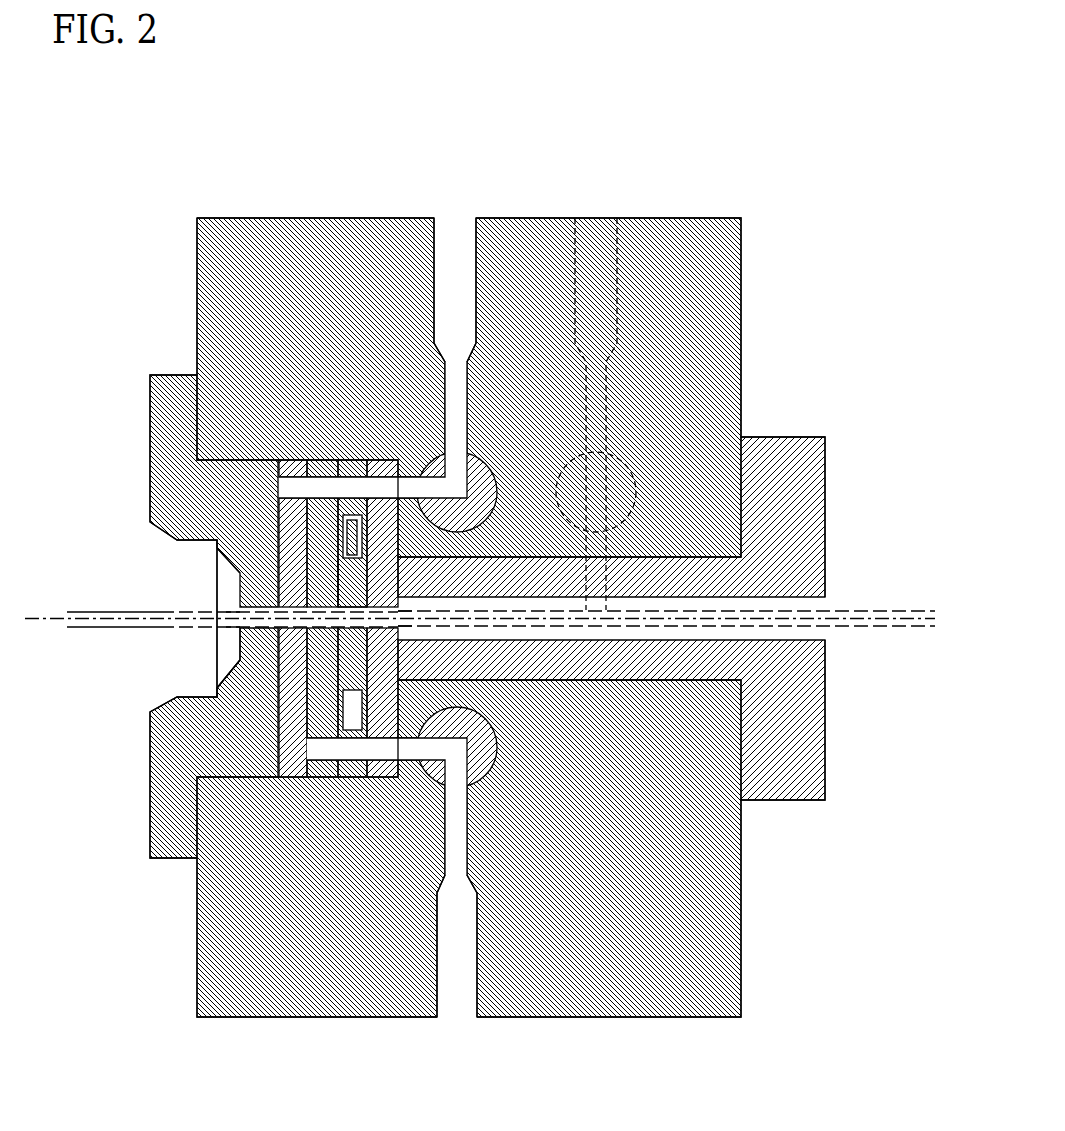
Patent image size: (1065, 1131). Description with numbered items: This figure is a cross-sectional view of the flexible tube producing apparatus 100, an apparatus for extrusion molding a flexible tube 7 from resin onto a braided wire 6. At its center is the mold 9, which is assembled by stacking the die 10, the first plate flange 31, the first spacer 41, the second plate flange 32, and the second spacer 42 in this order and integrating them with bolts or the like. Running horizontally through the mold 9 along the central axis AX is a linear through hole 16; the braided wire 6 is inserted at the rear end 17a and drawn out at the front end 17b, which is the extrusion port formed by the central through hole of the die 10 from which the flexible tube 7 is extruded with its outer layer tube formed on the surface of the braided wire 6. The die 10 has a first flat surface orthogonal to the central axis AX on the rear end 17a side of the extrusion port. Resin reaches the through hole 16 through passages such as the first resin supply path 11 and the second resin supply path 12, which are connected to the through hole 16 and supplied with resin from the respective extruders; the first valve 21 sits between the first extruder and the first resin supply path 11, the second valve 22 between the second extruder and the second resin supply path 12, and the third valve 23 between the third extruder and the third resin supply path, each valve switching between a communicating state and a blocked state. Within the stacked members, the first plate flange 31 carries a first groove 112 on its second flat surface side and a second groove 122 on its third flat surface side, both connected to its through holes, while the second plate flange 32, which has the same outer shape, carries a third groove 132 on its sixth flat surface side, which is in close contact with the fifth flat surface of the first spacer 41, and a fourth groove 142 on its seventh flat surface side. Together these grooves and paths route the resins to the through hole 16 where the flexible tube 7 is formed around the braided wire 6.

The flexible tube producing apparatus 100 is at (192, 172).
The first resin supply path 11 is at (355, 488).
The second resin supply path 12 is at (278, 750).
The mold 9 is at (152, 374).
The die 10 is at (152, 790).
The first valve 21 is at (478, 455).
The second valve 22 is at (492, 790).
The third valve 23 is at (625, 455).
The first plate flange 31 is at (292, 777).
The first spacer 41 is at (322, 777).
The second plate flange 32 is at (352, 777).
The second spacer 42 is at (382, 777).
The through hole 16 is at (240, 597).
The flexible tube 7 is at (93, 612).
The braided wire 6 is at (888, 612).
The central axis AX is at (32, 617).
The rear end 17a is at (398, 636).
The front end 17b is at (240, 628).
The first groove 112 is at (240, 650).
The second groove 122 is at (250, 672).
The third groove 132 is at (350, 600).
The fourth groove 142 is at (337, 588).